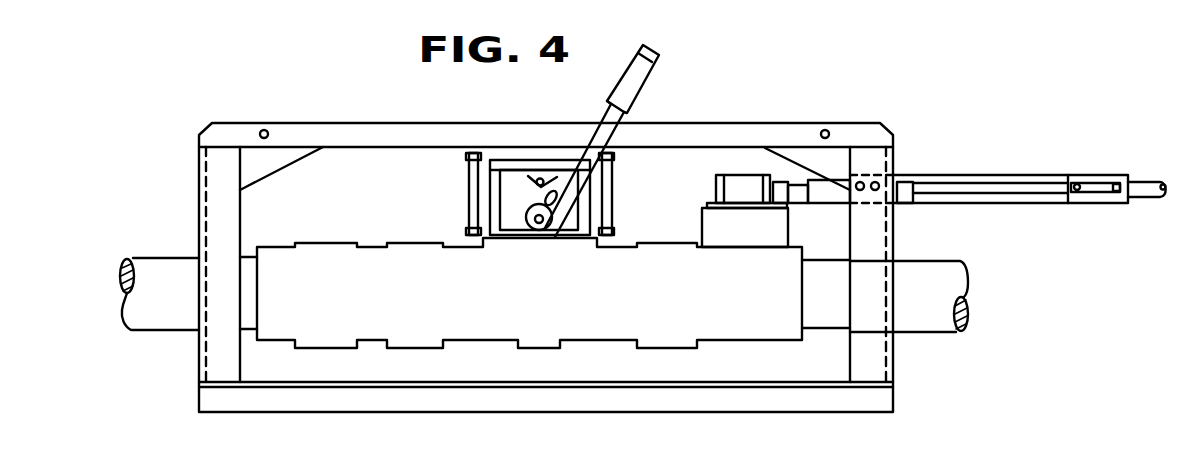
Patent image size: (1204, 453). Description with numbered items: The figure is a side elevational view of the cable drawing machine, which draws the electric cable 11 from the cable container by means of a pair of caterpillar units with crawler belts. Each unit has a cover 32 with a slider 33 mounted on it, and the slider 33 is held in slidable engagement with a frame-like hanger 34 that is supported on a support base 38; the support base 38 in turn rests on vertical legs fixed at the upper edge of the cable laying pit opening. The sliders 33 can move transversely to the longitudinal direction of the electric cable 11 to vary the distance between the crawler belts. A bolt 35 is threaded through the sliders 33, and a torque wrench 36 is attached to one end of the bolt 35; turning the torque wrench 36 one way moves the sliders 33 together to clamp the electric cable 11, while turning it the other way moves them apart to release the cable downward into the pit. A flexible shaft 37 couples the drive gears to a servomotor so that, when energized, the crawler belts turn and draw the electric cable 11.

The electric cable 11 is at (163, 268).
The cover 32 is at (763, 330).
The slider 33 is at (582, 210).
The frame-like hanger 34 is at (466, 184).
The bolt 35 is at (543, 226).
The torque wrench 36 is at (657, 57).
The flexible shaft 37 is at (983, 173).
The support base 38 is at (743, 122).